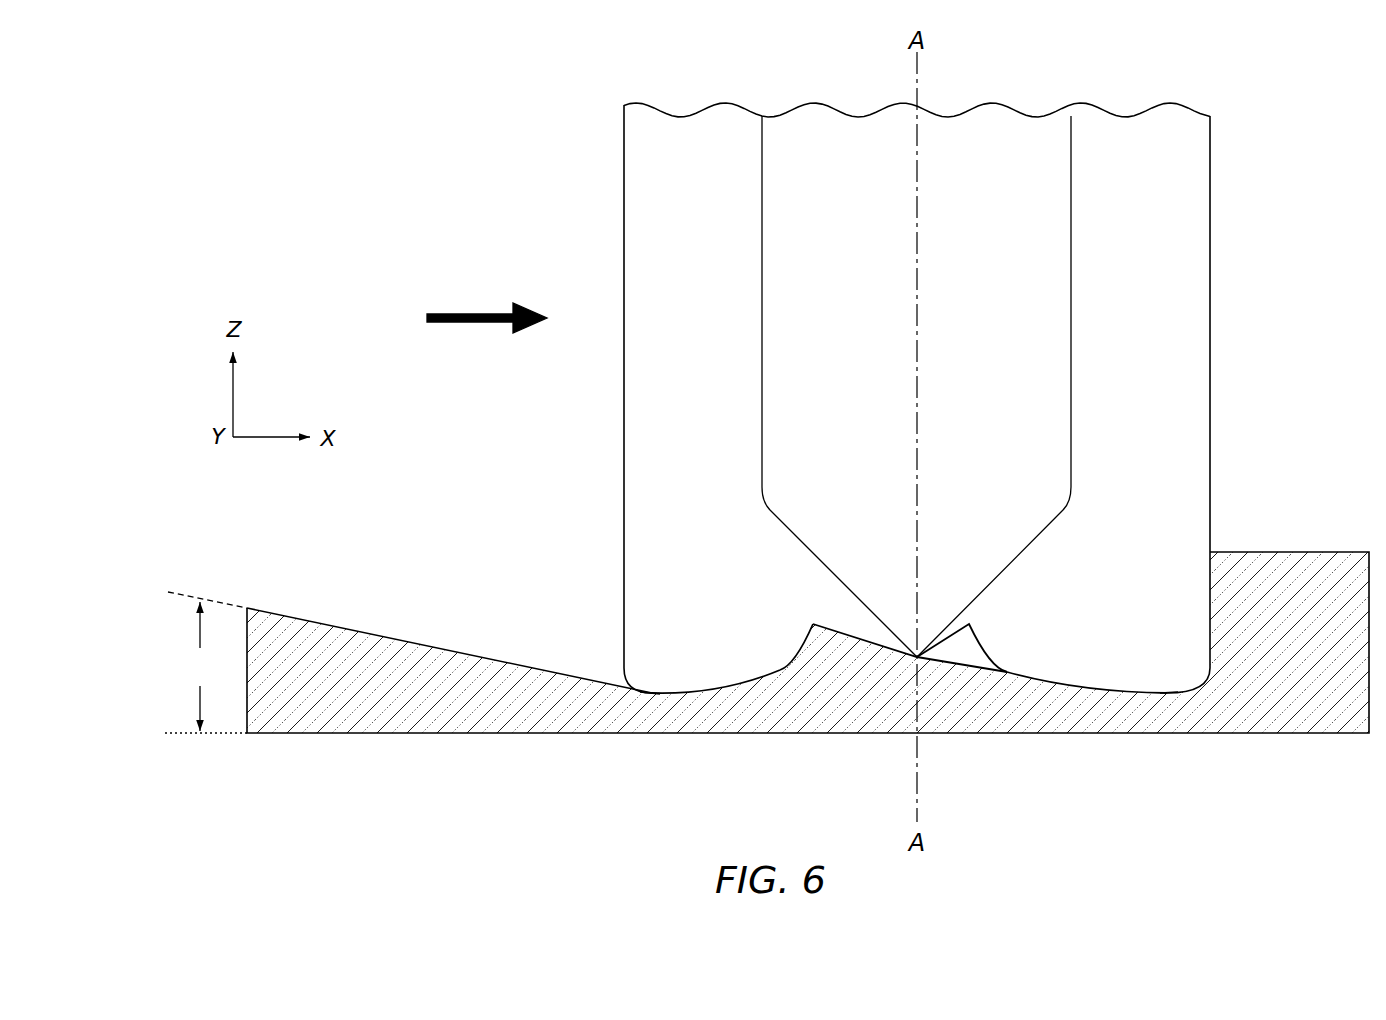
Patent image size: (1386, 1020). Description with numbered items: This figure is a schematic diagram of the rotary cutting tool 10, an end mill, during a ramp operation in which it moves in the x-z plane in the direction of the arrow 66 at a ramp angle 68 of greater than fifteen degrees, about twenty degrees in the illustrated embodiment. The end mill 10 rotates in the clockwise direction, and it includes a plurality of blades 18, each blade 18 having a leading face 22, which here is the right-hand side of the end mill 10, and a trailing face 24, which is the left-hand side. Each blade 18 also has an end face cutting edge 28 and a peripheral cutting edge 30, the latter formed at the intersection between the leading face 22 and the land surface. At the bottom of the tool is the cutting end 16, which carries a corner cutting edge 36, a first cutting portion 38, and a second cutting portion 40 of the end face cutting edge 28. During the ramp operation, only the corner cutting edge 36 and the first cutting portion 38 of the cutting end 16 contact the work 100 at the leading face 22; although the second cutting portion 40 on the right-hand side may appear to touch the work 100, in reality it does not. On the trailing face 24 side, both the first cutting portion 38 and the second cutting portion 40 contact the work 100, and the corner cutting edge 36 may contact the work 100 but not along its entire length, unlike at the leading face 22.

The rotary cutting tool 10 is at (808, 446).
The cutting end 16 is at (808, 677).
The blade 18 is at (914, 448).
The leading face 22 is at (1172, 445).
The trailing face 24 is at (663, 532).
The end face cutting edge 28 is at (708, 700).
The peripheral cutting edge 30 is at (1214, 495).
The corner cutting edge 36 is at (625, 690).
The first cutting portion 38 is at (664, 694).
The second cutting portion 40 is at (763, 683).
The arrow 66 is at (480, 311).
The ramp angle 68 is at (206, 662).
The work 100 is at (407, 706).